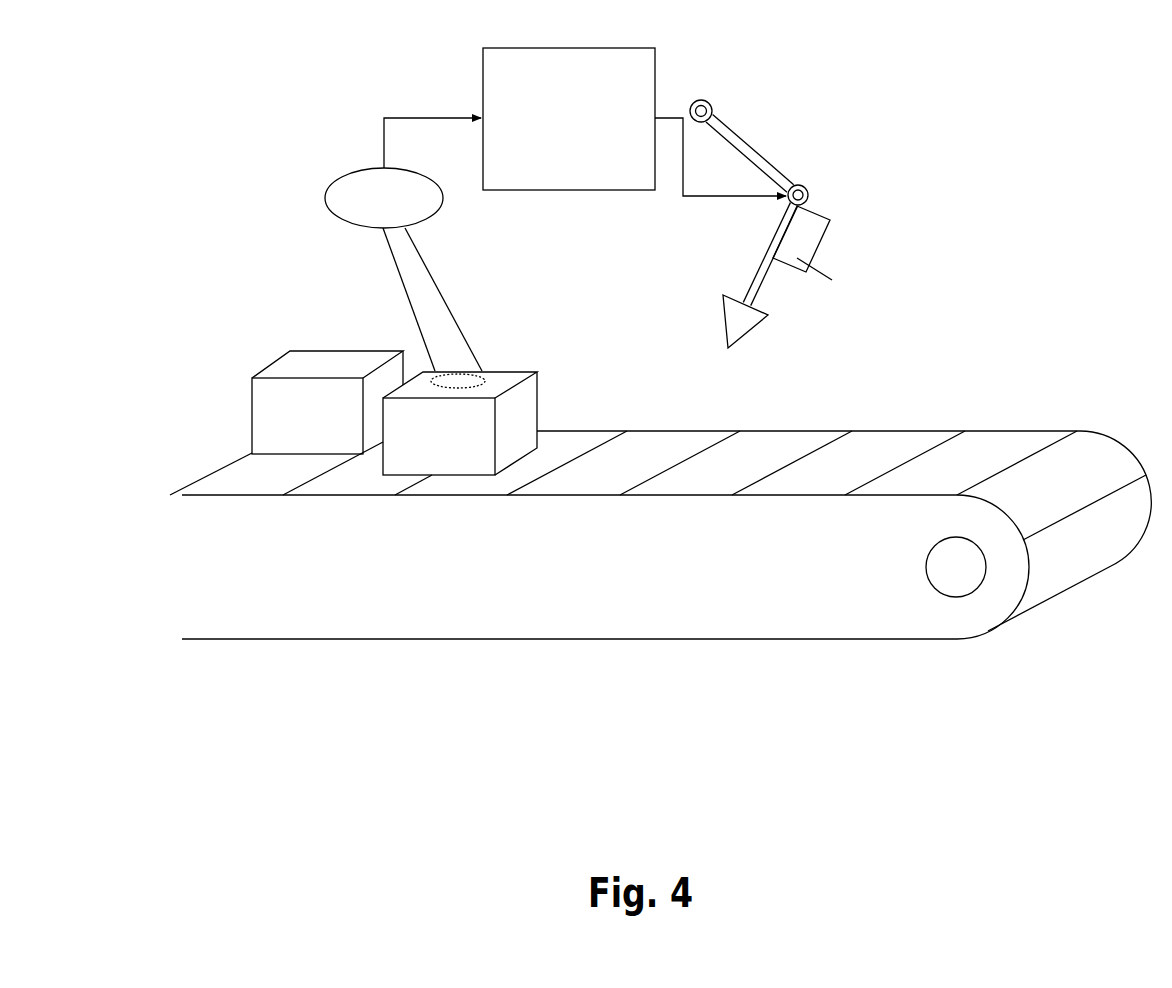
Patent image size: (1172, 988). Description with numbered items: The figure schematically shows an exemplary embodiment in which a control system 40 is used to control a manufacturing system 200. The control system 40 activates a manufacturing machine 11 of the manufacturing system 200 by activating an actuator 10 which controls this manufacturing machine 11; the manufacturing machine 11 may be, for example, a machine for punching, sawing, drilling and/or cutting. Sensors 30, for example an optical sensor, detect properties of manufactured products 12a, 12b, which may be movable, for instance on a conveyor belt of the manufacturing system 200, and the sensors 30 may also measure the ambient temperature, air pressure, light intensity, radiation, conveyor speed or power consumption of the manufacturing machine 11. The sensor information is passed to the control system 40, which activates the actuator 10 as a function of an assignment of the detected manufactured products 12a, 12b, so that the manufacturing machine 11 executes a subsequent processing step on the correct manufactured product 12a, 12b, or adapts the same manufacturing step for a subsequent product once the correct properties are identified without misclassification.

The control system 40 is at (473, 57).
The sensors 30 is at (325, 200).
The manufacturing machine 11 is at (767, 162).
The actuator 10 is at (823, 240).
The manufactured product 12b is at (270, 363).
The manufactured product 12a is at (545, 402).
The manufacturing system 200 is at (555, 641).